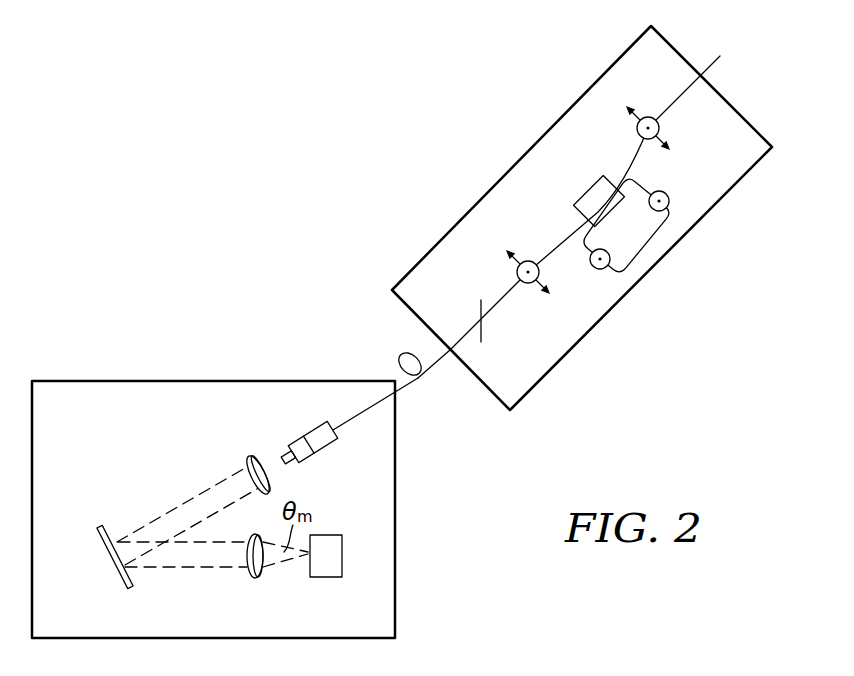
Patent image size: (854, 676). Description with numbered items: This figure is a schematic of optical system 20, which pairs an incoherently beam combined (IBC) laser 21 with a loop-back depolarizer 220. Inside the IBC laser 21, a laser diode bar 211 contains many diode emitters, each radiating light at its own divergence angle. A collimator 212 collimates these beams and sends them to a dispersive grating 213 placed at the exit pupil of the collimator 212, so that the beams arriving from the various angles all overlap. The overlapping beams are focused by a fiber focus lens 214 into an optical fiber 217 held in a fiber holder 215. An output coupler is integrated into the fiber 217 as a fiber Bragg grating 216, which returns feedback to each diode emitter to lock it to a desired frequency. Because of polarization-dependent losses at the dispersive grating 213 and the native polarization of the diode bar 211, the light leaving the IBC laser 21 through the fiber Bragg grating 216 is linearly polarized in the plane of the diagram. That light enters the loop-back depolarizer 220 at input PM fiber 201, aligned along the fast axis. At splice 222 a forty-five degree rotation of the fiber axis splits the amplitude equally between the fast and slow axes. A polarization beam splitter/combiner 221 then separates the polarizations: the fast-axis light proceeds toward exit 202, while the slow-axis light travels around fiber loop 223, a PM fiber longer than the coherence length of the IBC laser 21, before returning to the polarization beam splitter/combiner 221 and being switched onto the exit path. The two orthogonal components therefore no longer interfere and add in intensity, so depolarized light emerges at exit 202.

The system 20 is at (318, 205).
The incoherently beam combined (IBC) laser 21 is at (214, 380).
The input PM fiber 201 is at (424, 370).
The exit 202 is at (673, 101).
The laser diode bar 211 is at (325, 578).
The collimator 212 is at (256, 580).
The dispersive grating 213 is at (117, 557).
The fiber focus lens 214 is at (250, 460).
The fiber holder 215 is at (312, 458).
The fiber Bragg grating (FBG) output coupler 216 is at (315, 434).
The optical fiber 217 is at (345, 427).
The loop-back depolarizer 220 is at (600, 320).
The polarization beam splitter/combiner 221 is at (590, 189).
The splice 222 is at (484, 333).
The fiber loop 223 is at (648, 250).